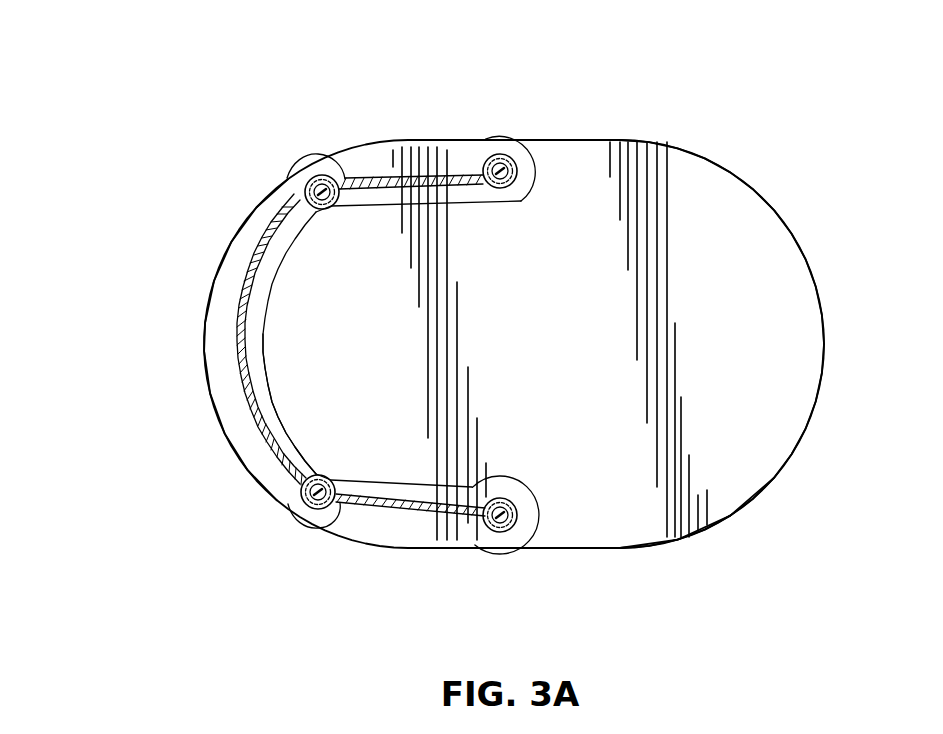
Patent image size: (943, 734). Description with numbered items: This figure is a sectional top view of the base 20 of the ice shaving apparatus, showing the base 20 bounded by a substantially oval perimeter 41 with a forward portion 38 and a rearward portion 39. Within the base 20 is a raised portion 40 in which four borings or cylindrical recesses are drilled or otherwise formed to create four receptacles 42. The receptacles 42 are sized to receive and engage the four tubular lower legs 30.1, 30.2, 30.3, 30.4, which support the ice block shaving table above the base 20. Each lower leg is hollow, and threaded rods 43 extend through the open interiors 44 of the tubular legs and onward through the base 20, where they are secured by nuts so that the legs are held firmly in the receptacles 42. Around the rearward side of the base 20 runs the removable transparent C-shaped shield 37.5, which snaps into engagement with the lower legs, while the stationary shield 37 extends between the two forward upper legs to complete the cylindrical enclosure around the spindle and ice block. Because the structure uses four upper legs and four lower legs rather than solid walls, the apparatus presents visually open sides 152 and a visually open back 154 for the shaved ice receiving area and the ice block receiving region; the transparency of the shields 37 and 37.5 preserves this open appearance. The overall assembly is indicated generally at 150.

The base 20 is at (697, 152).
The stationary shield 37 is at (773, 272).
The forward portion 38 is at (757, 468).
The raised portion 40 is at (218, 352).
The removable transparent C-shaped shield 37.5 is at (238, 383).
The rearward portion 39 is at (318, 407).
The substantially oval perimeter 41 is at (222, 437).
The receptacles 42 is at (530, 152).
The threaded rods 43 is at (501, 160).
The open interiors 44 is at (484, 169).
The lower leg 30.1 is at (487, 156).
The lower leg 30.2 is at (302, 170).
The lower leg 30.3 is at (320, 513).
The lower leg 30.4 is at (488, 551).
The housing assembly 150 is at (800, 340).
The sides 152 is at (370, 124).
The back 154 is at (183, 338).